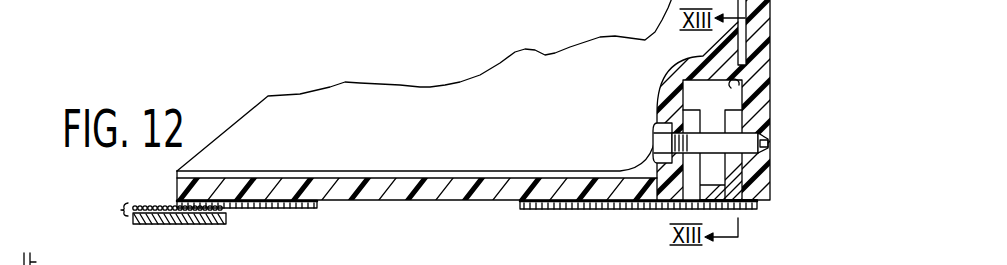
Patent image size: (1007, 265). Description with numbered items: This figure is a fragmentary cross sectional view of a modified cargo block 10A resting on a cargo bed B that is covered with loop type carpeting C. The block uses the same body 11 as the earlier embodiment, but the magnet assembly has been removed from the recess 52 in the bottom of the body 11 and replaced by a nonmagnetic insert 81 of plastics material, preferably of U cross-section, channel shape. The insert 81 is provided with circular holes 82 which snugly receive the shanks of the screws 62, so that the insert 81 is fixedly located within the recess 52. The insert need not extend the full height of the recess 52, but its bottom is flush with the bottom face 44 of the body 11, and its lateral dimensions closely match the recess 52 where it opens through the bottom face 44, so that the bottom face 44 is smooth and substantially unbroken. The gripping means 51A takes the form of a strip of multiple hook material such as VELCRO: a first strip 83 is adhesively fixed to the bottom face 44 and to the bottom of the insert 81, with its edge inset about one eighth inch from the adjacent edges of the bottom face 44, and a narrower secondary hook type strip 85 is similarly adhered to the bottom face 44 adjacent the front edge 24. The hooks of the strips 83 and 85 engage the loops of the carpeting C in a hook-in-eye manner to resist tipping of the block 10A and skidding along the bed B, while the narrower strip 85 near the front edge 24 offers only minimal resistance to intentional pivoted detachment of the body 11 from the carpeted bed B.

The body 11 is at (430, 84).
The block 10A is at (779, 60).
The front edge 24 is at (148, 179).
The bottom face 44 is at (420, 202).
The secondary hook type strip 85 is at (276, 205).
The gripping means 51A is at (541, 212).
The recess 52 is at (742, 88).
The nonmagnetic insert 81 is at (733, 118).
The circular holes 82 is at (750, 136).
The screws 62 is at (764, 152).
The first strip 83 is at (727, 207).
The loop type carpeting C is at (121, 208).
The cargo bed B is at (167, 224).